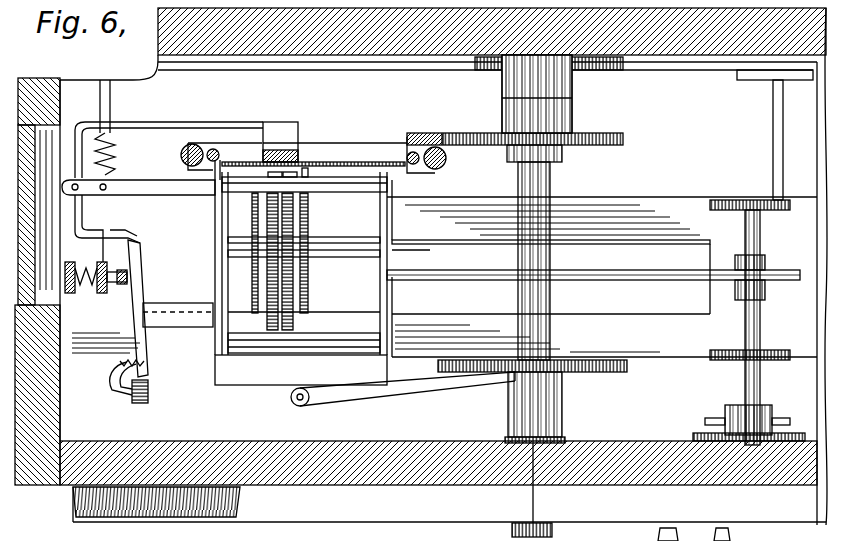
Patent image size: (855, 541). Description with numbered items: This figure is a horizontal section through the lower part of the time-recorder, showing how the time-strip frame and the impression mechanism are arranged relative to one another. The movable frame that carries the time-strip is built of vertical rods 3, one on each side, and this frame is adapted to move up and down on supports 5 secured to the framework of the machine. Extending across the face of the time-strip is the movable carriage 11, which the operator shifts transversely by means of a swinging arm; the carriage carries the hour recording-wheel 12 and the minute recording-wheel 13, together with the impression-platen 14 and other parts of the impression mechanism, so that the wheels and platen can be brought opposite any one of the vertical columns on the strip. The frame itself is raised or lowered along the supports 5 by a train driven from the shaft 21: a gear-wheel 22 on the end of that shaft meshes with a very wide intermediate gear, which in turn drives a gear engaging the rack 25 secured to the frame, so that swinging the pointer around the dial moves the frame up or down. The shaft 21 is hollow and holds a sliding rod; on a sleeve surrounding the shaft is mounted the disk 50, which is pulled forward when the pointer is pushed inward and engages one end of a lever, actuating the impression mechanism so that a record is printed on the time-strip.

The vertical rods 3 is at (219, 153).
The supports 5 is at (181, 155).
The movable carriage 11 is at (388, 250).
The hour recording-wheel 12 is at (300, 213).
The minute recording-wheel 13 is at (270, 212).
The impression-platen 14 is at (290, 140).
The shaft 21 is at (556, 441).
The gear-wheel 22 is at (618, 135).
The rack 25 is at (425, 133).
The disk 50 is at (614, 372).